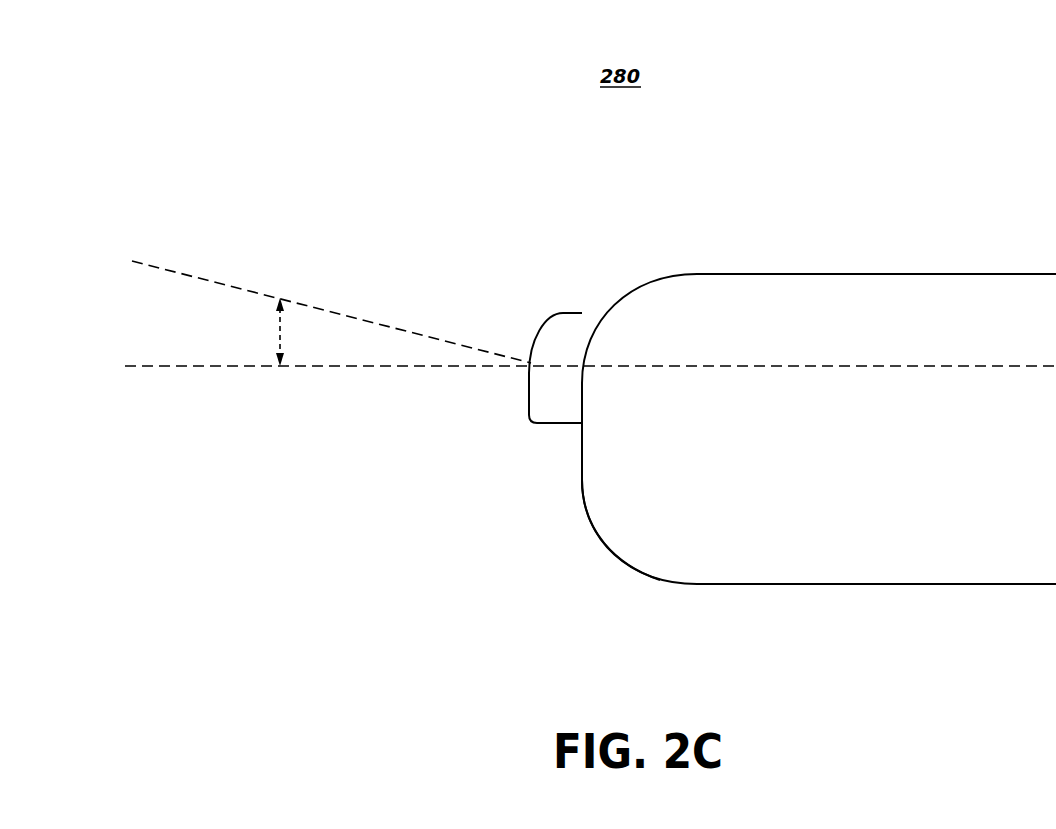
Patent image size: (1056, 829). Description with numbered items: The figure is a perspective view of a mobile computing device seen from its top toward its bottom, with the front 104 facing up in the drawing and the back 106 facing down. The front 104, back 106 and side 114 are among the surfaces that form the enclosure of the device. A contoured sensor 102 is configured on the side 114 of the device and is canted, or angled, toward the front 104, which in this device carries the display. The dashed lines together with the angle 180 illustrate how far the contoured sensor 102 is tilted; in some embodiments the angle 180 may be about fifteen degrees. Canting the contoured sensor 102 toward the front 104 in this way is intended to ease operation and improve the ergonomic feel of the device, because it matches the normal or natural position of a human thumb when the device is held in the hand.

The front 104 is at (770, 274).
The back 106 is at (768, 584).
The right side 114 is at (593, 522).
The contoured sensor 102 is at (528, 395).
The angle 180 is at (273, 327).